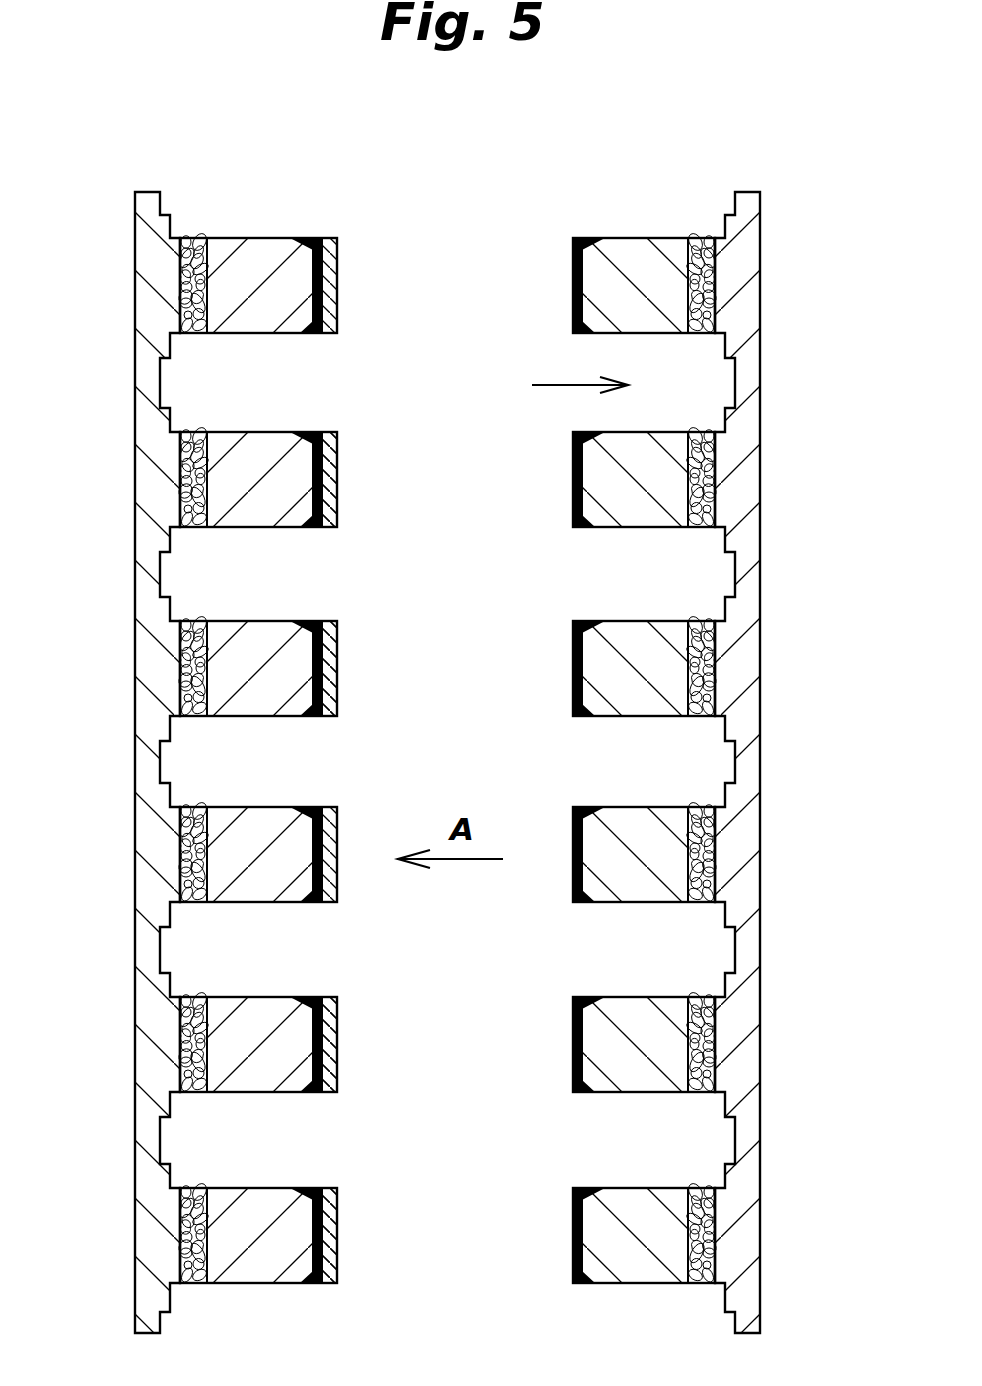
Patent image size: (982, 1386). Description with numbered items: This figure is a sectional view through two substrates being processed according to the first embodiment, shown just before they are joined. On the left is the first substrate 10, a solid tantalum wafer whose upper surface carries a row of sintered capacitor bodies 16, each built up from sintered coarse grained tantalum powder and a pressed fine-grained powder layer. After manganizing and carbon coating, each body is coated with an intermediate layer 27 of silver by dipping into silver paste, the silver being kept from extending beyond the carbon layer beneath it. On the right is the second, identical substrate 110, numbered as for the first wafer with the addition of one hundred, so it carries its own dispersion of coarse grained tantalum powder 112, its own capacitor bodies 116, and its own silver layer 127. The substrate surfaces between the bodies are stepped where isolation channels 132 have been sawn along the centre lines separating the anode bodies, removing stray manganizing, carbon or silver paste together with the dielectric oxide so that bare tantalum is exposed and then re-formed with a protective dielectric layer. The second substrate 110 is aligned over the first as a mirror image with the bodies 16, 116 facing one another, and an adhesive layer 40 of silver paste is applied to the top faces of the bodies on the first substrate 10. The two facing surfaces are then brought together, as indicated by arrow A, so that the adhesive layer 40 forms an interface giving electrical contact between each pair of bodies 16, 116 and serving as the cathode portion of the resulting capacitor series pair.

The first substrate 10 is at (150, 668).
The capacitor body 16 is at (217, 253).
The intermediate layer of silver 27 is at (304, 240).
The adhesive layer 40 is at (337, 480).
The second substrate 110 is at (738, 662).
The dispersion of coarse grained tantalum powder 112 is at (713, 467).
The capacitor body 116 is at (673, 253).
The intermediate layer of silver 127 is at (590, 240).
The isolation channel 132 is at (545, 386).